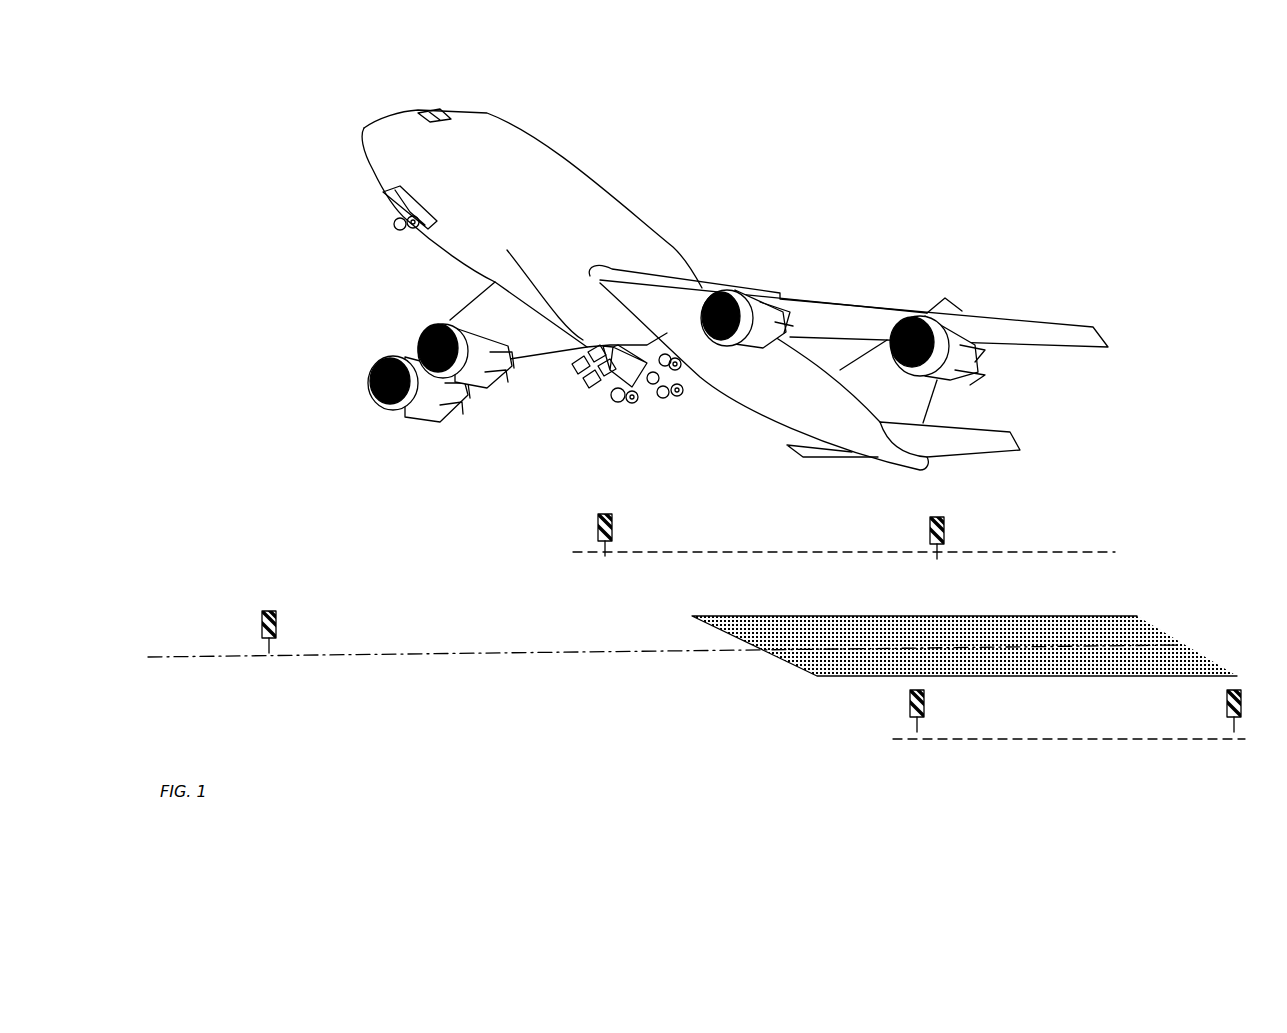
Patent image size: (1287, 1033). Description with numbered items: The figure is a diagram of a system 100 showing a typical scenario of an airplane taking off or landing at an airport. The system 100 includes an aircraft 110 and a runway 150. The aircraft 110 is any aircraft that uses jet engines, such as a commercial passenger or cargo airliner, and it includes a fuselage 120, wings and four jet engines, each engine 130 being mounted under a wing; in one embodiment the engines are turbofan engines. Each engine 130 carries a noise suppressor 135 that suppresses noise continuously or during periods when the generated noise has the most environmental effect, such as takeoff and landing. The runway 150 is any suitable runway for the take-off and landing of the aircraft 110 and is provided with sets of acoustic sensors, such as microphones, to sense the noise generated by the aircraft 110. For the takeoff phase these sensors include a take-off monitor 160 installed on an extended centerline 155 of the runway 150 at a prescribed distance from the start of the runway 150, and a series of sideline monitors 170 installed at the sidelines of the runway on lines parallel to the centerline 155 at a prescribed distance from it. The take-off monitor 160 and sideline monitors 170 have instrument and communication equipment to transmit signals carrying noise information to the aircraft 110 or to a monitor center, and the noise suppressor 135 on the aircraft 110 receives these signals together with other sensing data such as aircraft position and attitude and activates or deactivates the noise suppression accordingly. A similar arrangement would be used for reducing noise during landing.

The system 100 is at (995, 101).
The aircraft 110 is at (477, 122).
The fuselage 120 is at (521, 167).
The jet engine 130 is at (741, 280).
The noise suppressor 135 is at (787, 294).
The runway 150 is at (1120, 618).
The centerline 155 is at (567, 650).
The take-off monitor 160 is at (268, 610).
The sideline monitor 170 is at (1223, 740).